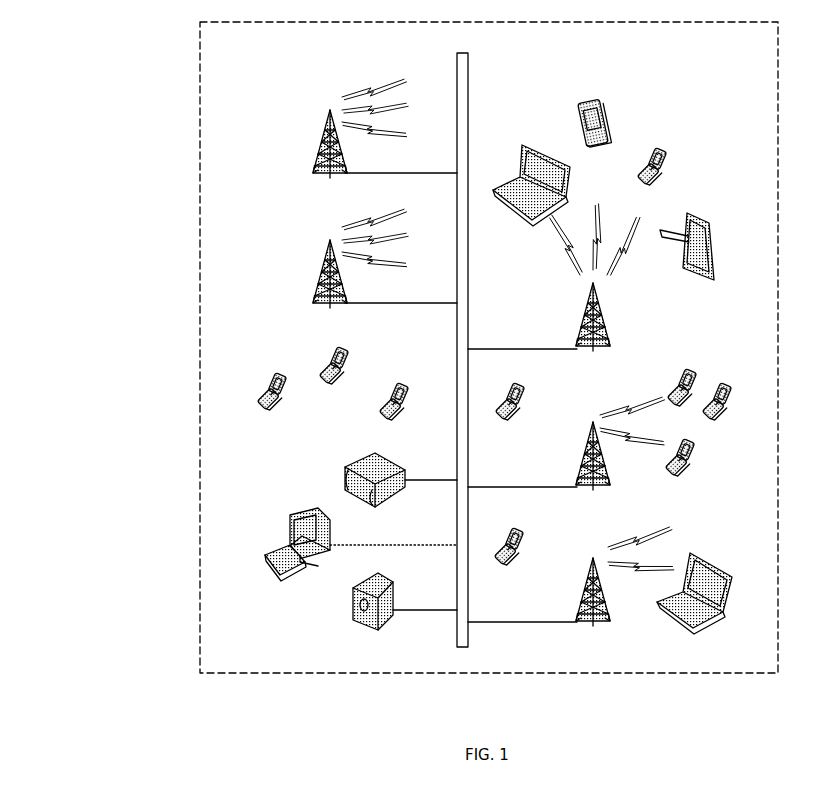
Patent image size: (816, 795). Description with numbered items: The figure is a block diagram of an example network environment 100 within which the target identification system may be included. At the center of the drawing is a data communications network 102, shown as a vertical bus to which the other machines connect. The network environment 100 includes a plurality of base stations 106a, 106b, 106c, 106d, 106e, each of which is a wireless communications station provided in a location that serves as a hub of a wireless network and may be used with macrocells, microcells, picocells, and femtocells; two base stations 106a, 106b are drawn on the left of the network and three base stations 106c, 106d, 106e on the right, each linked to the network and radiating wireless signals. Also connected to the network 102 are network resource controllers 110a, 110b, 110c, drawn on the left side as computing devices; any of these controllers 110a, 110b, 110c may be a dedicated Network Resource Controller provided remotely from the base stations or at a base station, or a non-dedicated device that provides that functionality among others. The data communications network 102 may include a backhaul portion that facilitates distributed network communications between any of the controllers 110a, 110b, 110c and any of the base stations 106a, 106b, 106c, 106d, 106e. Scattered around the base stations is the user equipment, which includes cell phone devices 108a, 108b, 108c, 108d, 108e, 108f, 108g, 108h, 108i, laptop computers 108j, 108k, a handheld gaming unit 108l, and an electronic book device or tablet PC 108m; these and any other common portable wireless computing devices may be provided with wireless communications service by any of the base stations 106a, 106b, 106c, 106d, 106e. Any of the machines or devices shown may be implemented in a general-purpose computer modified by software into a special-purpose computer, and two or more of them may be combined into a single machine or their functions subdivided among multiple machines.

The network environment 100 is at (68, 90).
The data communications network 102 is at (455, 62).
The base station 106a is at (318, 140).
The base station 106b is at (318, 270).
The base station 106c is at (585, 592).
The base station 106d is at (585, 455).
The base station 106e is at (608, 330).
The cell phone device 108a is at (270, 380).
The cell phone device 108b is at (330, 352).
The cell phone device 108c is at (385, 415).
The cell phone device 108d is at (532, 530).
The cell phone device 108e is at (692, 472).
The cell phone device 108f is at (732, 415).
The cell phone device 108g is at (700, 362).
The cell phone device 108h is at (528, 388).
The cell phone device 108i is at (683, 145).
The laptop computer 108j is at (712, 560).
The laptop computer 108k is at (530, 145).
The handheld gaming unit 108l is at (612, 113).
The tablet PC 108m is at (718, 222).
The network resource controller 110a is at (330, 478).
The network resource controller 110b is at (285, 512).
The network resource controller 110c is at (352, 617).